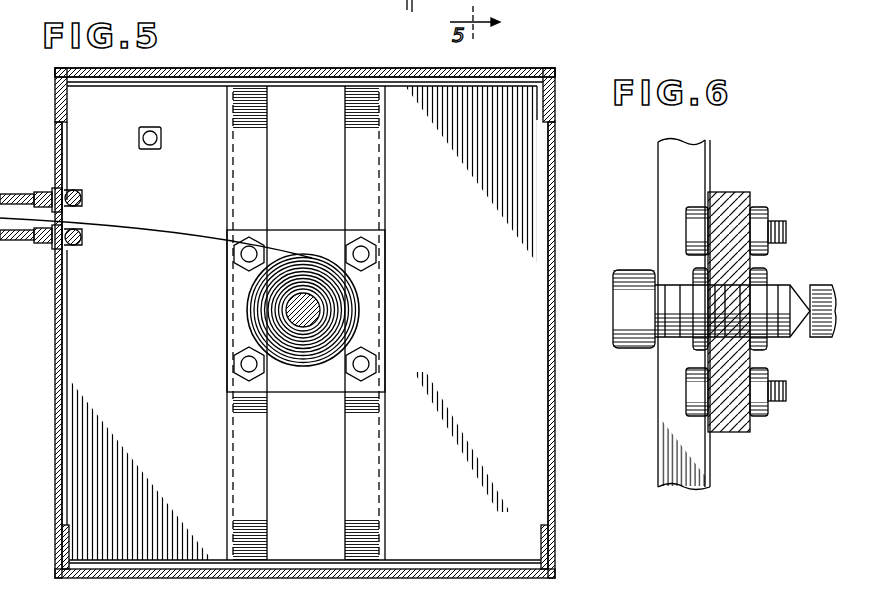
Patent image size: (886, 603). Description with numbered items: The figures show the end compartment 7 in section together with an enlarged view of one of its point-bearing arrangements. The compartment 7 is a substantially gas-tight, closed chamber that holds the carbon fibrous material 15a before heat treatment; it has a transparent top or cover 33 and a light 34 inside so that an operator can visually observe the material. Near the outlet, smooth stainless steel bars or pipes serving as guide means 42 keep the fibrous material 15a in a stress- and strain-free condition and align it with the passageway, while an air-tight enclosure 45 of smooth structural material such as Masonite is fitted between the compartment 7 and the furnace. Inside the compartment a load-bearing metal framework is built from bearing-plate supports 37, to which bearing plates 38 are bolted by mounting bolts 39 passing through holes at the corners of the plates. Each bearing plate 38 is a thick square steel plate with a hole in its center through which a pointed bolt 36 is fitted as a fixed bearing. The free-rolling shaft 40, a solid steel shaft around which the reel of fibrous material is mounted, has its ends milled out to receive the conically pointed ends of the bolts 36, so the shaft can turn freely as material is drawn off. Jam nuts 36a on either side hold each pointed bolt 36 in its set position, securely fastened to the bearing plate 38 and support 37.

In FIG. 5, the compartment 7 is at (517, 421).
In FIG. 5, the fibrous material 15a is at (114, 234).
In FIG. 5, the transparent top or cover 33 is at (282, 68).
In FIG. 5, the light 34 is at (160, 130).
In FIG. 6, the pointed bolt 36 is at (765, 285).
In FIG. 6, the jam nut 36a is at (698, 272).
In FIG. 5, the bearing-plate support 37 is at (372, 187).
In FIG. 6, the bearing-plate support 37 is at (712, 150).
In FIG. 5, the bearing plate 38 is at (378, 300).
In FIG. 6, the bearing plate 38 is at (735, 192).
In FIG. 5, the mounting bolt 39 is at (245, 366).
In FIG. 6, the mounting bolt 39 is at (778, 222).
In FIG. 5, the free-rolling shaft 40 is at (300, 310).
In FIG. 6, the free-rolling shaft 40 is at (822, 330).
In FIG. 5, the guide means 42 is at (72, 194).
In FIG. 5, the air-tight enclosure 45 is at (10, 195).